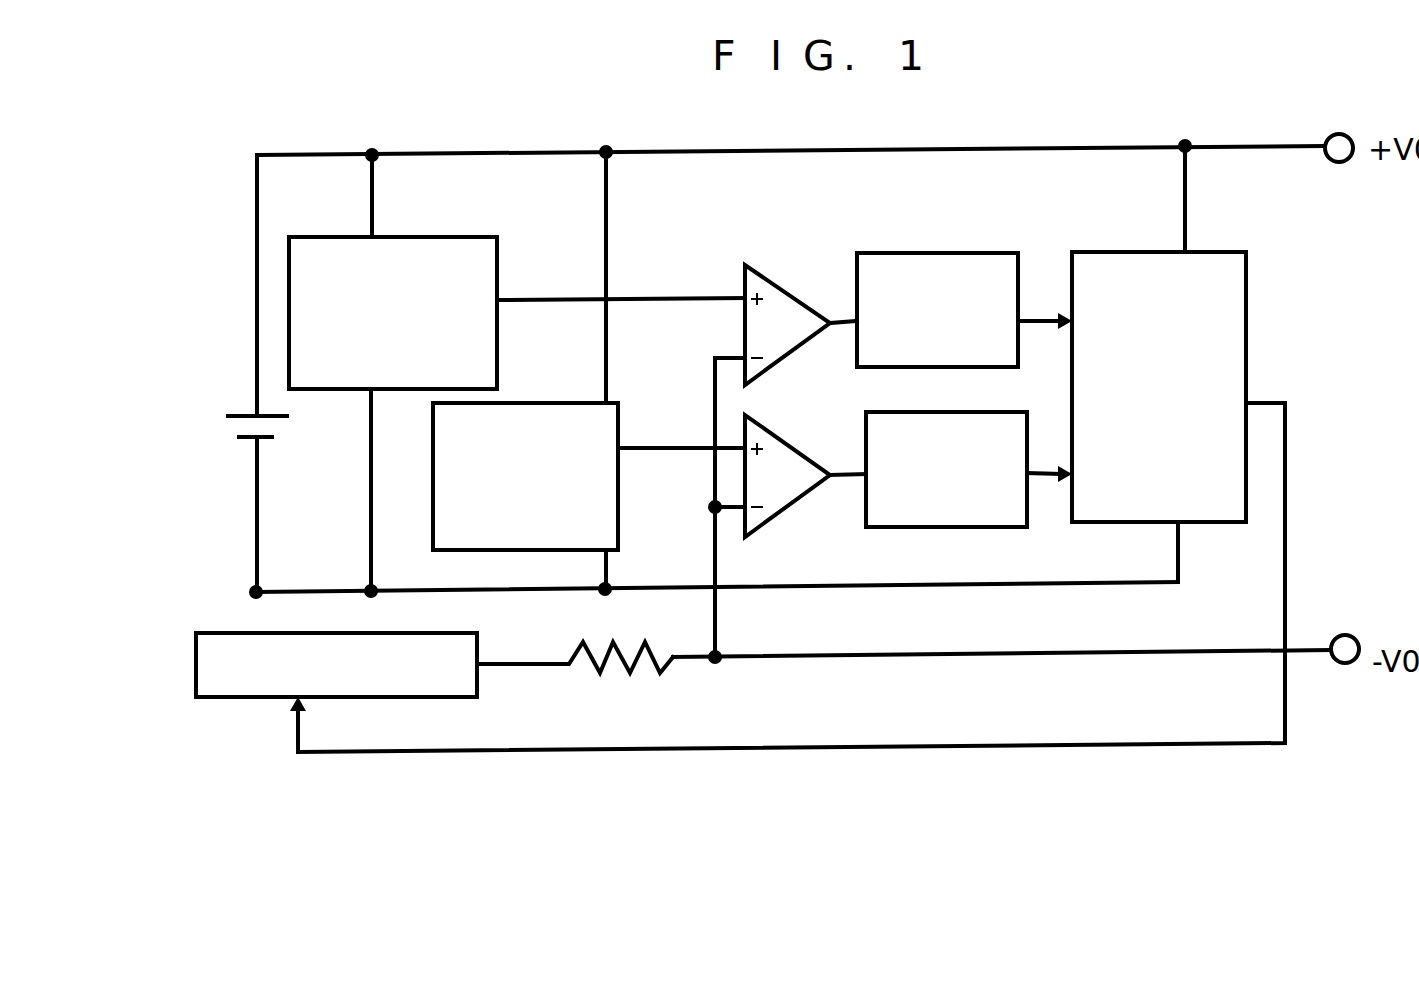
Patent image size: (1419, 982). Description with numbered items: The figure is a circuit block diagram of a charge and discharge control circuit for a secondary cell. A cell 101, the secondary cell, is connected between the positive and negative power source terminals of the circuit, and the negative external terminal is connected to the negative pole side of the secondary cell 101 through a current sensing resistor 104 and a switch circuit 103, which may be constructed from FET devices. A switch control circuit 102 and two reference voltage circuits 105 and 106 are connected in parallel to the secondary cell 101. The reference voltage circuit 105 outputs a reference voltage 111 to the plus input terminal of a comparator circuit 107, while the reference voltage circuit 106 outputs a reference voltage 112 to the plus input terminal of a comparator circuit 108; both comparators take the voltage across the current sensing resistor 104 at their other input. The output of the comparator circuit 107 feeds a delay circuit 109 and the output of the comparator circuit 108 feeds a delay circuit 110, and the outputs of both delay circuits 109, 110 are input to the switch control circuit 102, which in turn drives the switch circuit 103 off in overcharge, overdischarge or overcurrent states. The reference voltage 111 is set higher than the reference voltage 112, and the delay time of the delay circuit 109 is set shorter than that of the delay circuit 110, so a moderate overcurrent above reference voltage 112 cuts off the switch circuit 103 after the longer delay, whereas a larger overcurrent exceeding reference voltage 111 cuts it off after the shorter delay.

The secondary cell 101 is at (203, 405).
The switch control circuit 102 is at (1247, 279).
The switch circuit 103 is at (438, 697).
The current sensing resistor 104 is at (630, 688).
The reference voltage circuit 105 is at (475, 205).
The reference voltage circuit 106 is at (623, 407).
The comparator circuit 107 is at (737, 267).
The comparator circuit 108 is at (770, 527).
The delay circuit 109 is at (922, 252).
The delay circuit 110 is at (935, 527).
The reference voltage 111 is at (621, 282).
The reference voltage 112 is at (681, 431).